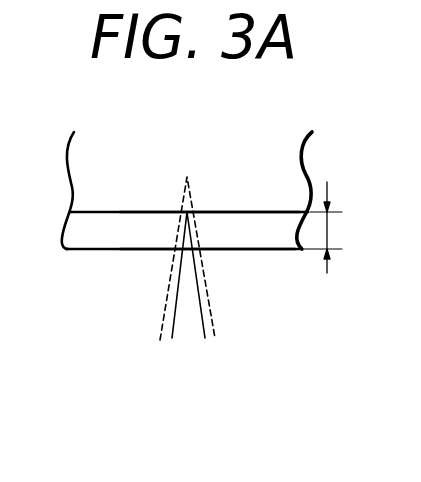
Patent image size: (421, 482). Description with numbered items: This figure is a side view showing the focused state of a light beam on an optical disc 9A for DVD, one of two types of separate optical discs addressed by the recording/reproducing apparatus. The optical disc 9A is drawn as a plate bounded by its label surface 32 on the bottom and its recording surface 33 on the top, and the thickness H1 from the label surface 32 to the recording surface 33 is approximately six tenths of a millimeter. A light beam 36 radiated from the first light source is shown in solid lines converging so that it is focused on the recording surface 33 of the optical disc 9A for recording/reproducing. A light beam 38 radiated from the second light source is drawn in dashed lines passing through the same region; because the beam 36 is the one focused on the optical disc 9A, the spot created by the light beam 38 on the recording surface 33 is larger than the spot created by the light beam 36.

The optical disc for DVD 9A is at (106, 259).
The recording surface 33 is at (264, 197).
The label surface 32 is at (270, 249).
The light beam 36 is at (173, 325).
The light beam 38 is at (215, 327).
The thickness H1 is at (337, 227).